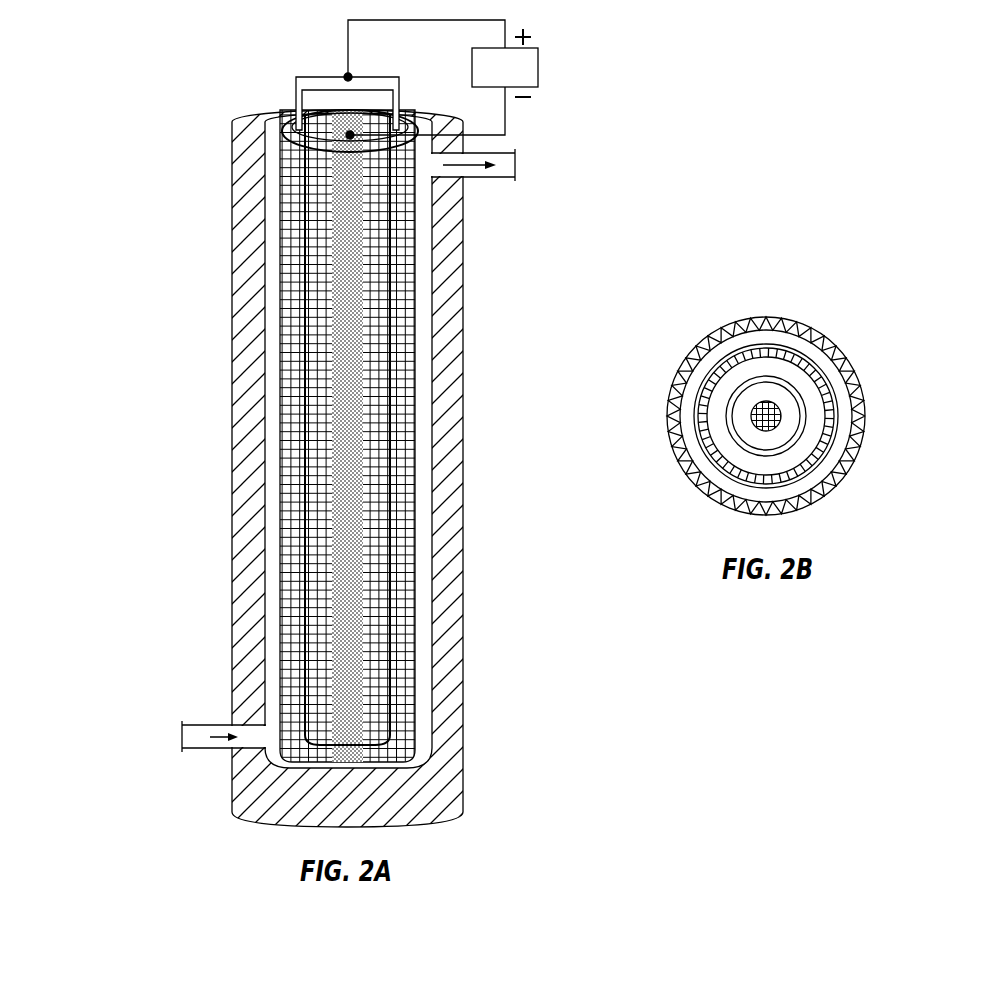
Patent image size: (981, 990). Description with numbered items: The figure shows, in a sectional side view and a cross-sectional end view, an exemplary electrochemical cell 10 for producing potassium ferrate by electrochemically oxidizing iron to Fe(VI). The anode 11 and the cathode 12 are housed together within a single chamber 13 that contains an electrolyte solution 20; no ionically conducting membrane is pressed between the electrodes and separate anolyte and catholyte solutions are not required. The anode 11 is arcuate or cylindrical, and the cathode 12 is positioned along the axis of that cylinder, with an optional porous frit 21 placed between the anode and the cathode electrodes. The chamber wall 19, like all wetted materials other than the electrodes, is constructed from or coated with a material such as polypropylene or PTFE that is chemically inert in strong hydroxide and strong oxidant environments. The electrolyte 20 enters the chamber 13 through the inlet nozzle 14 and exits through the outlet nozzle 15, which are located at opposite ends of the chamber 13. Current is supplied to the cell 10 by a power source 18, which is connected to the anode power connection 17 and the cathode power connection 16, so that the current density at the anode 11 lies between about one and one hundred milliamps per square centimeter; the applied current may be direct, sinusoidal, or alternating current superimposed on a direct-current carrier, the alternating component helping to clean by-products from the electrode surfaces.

In FIG. 2A, the electrochemical cell 10 is at (324, 423).
In FIG. 2B, the electrochemical cell 10 is at (772, 406).
In FIG. 2A, the anode 11 is at (398, 502).
In FIG. 2B, the anode 11 is at (697, 430).
In FIG. 2A, the cathode 12 is at (350, 420).
In FIG. 2B, the cathode 12 is at (780, 425).
In FIG. 2A, the chamber 13 is at (425, 233).
In FIG. 2B, the chamber 13 is at (762, 342).
In FIG. 2A, the inlet nozzle 14 is at (182, 728).
In FIG. 2A, the outlet nozzle 15 is at (503, 153).
In FIG. 2A, the cathode power connection 16 is at (297, 110).
In FIG. 2A, the anode power connection 17 is at (295, 82).
In FIG. 2A, the power source 18 is at (520, 68).
In FIG. 2A, the chamber wall 19 is at (422, 557).
In FIG. 2B, the chamber wall 19 is at (863, 402).
In FIG. 2A, the electrolyte solution 20 is at (125, 755).
In FIG. 2A, the porous frit 21 is at (305, 347).
In FIG. 2B, the porous frit 21 is at (750, 452).